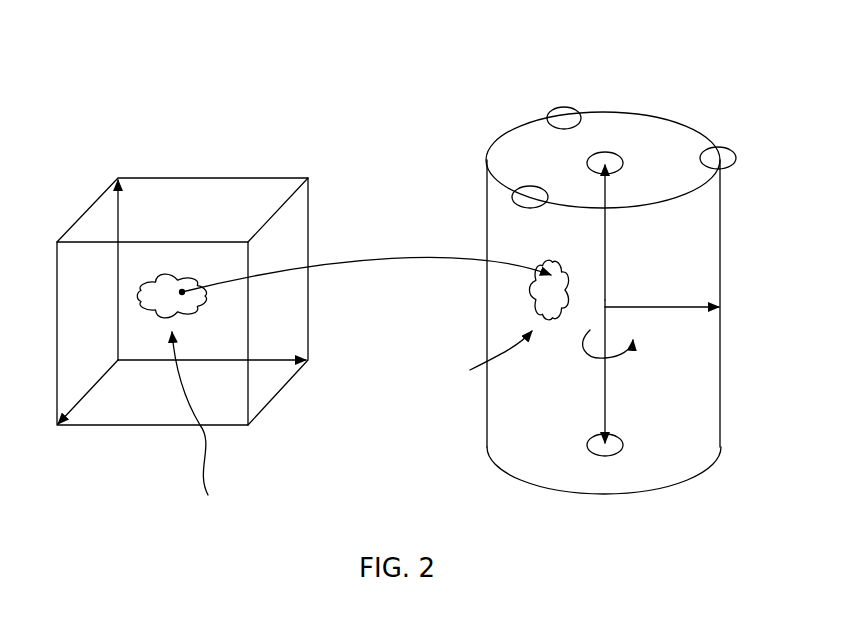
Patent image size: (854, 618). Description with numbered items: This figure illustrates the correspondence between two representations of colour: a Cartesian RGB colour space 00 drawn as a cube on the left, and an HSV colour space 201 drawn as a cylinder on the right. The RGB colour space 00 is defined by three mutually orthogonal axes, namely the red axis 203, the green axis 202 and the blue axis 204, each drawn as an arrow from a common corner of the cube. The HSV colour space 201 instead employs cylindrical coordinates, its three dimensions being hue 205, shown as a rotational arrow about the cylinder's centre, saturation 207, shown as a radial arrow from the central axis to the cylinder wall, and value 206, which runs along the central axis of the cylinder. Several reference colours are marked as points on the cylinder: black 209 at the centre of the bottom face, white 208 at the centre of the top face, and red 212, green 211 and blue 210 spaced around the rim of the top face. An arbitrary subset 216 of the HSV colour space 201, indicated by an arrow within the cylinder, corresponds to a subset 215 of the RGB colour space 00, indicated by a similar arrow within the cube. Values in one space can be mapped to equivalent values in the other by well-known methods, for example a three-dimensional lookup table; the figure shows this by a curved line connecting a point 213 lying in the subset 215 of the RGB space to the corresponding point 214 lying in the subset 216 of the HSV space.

The Cartesian RGB colour space 00 is at (125, 150).
The HSV colour space 201 is at (497, 98).
The green axis 202 is at (122, 212).
The red axis 203 is at (267, 362).
The blue axis 204 is at (103, 387).
The hue 205 is at (633, 345).
The value 206 is at (605, 383).
The saturation 207 is at (690, 303).
The white point 208 is at (605, 163).
The black point 209 is at (604, 455).
The blue point 210 is at (523, 198).
The green point 211 is at (564, 118).
The red point 212 is at (718, 158).
The point in RGB space 213 is at (182, 290).
The corresponding point in HSV space 214 is at (550, 277).
The subset of the RGB space 215 is at (200, 427).
The subset of the HSV space 216 is at (477, 357).